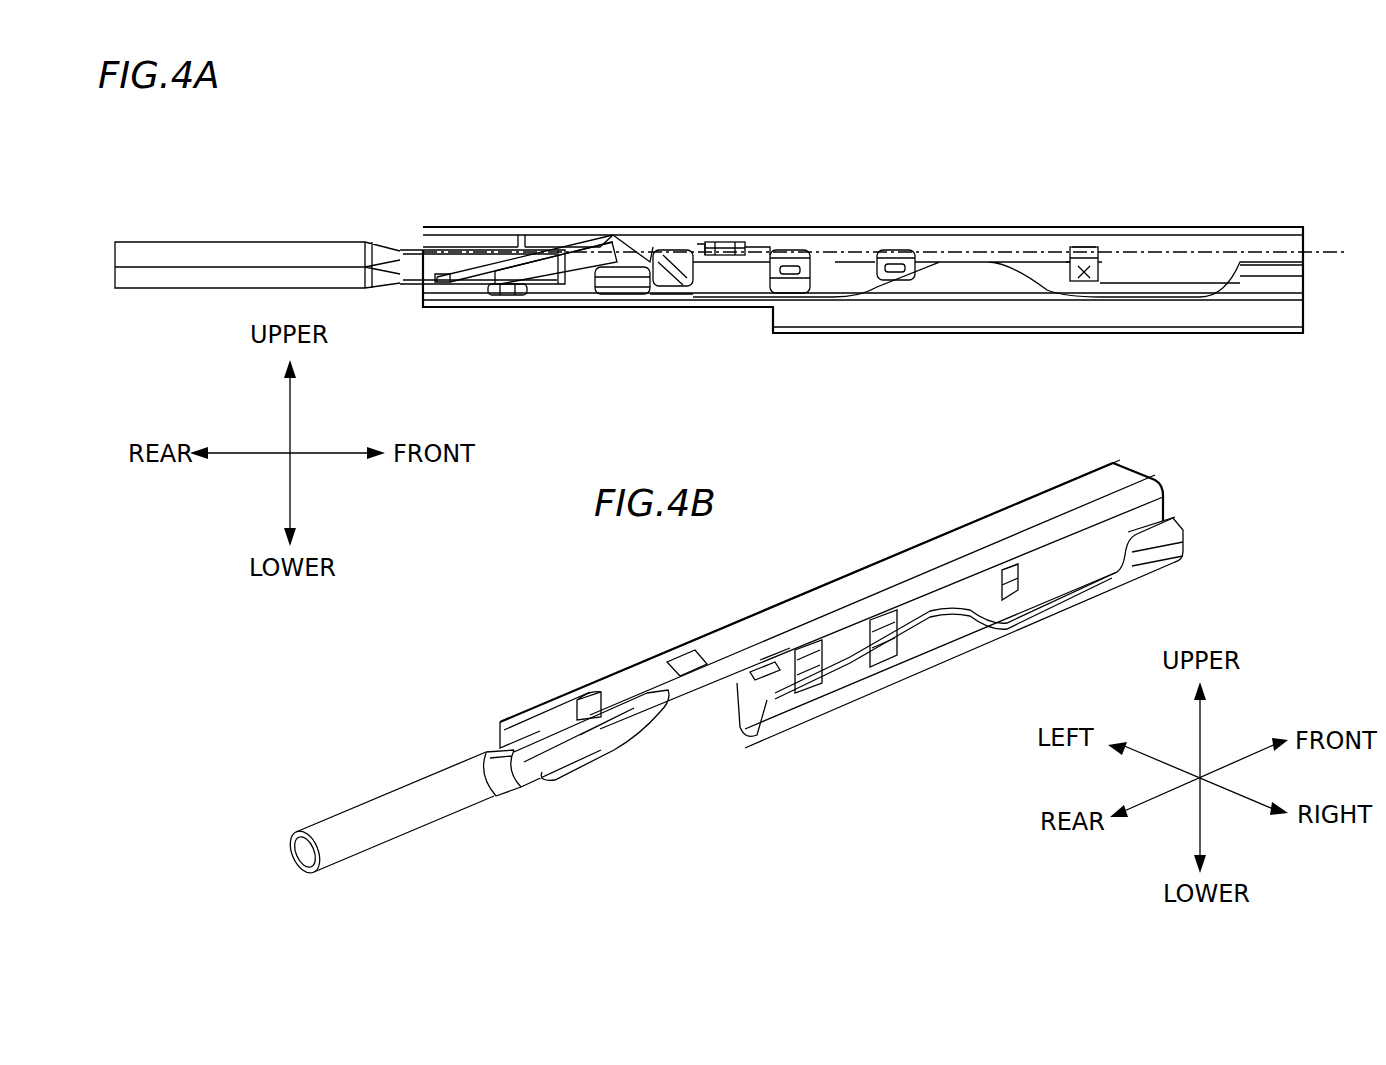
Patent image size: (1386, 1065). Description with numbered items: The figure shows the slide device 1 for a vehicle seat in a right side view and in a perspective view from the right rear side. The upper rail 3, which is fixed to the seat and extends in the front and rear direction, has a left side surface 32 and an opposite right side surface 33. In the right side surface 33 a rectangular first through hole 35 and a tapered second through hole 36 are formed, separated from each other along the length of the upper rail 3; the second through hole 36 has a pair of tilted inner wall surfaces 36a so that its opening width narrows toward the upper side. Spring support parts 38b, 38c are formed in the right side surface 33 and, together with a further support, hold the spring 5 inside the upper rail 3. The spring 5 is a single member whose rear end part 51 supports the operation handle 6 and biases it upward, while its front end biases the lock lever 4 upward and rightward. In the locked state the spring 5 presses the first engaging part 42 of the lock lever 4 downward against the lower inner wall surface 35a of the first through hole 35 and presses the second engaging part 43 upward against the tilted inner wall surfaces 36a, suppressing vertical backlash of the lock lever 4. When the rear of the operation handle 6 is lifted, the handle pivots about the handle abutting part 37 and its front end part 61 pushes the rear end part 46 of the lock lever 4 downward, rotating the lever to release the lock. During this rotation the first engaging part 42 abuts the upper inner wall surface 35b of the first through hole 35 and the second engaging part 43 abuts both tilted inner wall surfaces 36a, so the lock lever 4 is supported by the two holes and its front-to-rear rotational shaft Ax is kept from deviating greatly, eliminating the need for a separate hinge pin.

In FIG. 4A, the slide device 1 is at (364, 166).
In FIG. 4A, the upper rail 3 is at (886, 239).
In FIG. 4B, the upper rail 3 is at (873, 573).
In FIG. 4A, the lock lever 4 is at (636, 250).
In FIG. 4A, the spring 5 is at (870, 269).
In FIG. 4B, the spring 5 is at (731, 679).
In FIG. 4A, the operation handle 6 is at (262, 241).
In FIG. 4B, the operation handle 6 is at (368, 803).
In FIG. 4B, the left side surface 32 is at (1025, 488).
In FIG. 4A, the right side surface 33 is at (1198, 243).
In FIG. 4B, the right side surface 33 is at (1178, 508).
In FIG. 4A, the first through hole 35 is at (740, 300).
In FIG. 4B, the first through hole 35 is at (772, 668).
In FIG. 4A, the lower inner wall surface 35a is at (766, 246).
In FIG. 4A, the upper inner wall surface 35b is at (700, 245).
In FIG. 4A, the second through hole 36 is at (1080, 297).
In FIG. 4B, the second through hole 36 is at (998, 583).
In FIG. 4A, the tilted inner wall surfaces 36a is at (1069, 262).
In FIG. 4A, the handle abutting part 37 is at (517, 232).
In FIG. 4B, the handle abutting part 37 is at (600, 698).
In FIG. 4A, the spring support part 38b is at (790, 295).
In FIG. 4B, the spring support part 38b is at (812, 686).
In FIG. 4A, the spring support part 38c is at (900, 250).
In FIG. 4B, the spring support part 38c is at (895, 660).
In FIG. 4A, the first engaging part 42 is at (728, 245).
In FIG. 4B, the first engaging part 42 is at (768, 702).
In FIG. 4A, the second engaging part 43 is at (1083, 247).
In FIG. 4B, the second engaging part 43 is at (1021, 578).
In FIG. 4A, the rear end part 46 is at (605, 296).
In FIG. 4A, the rear end part 51 is at (445, 284).
In FIG. 4B, the rear end part 51 is at (547, 782).
In FIG. 4A, the front end part 61 is at (609, 240).
In FIG. 4A, the rotational shaft Ax is at (1322, 250).